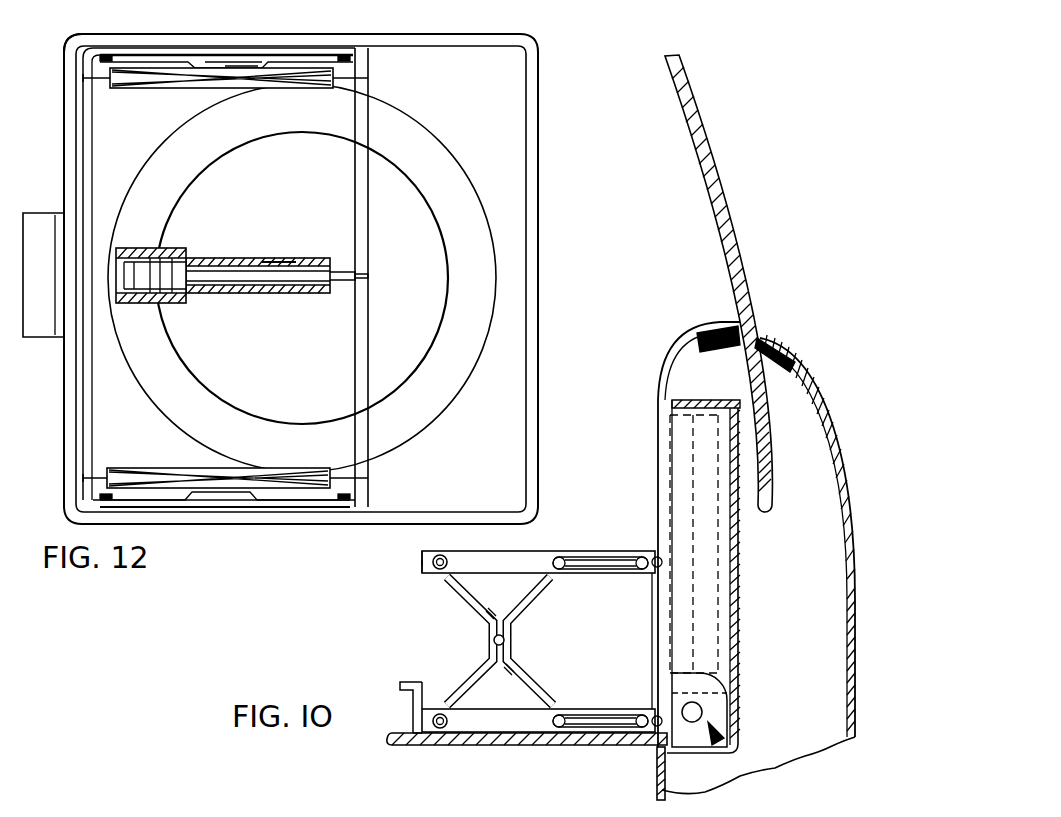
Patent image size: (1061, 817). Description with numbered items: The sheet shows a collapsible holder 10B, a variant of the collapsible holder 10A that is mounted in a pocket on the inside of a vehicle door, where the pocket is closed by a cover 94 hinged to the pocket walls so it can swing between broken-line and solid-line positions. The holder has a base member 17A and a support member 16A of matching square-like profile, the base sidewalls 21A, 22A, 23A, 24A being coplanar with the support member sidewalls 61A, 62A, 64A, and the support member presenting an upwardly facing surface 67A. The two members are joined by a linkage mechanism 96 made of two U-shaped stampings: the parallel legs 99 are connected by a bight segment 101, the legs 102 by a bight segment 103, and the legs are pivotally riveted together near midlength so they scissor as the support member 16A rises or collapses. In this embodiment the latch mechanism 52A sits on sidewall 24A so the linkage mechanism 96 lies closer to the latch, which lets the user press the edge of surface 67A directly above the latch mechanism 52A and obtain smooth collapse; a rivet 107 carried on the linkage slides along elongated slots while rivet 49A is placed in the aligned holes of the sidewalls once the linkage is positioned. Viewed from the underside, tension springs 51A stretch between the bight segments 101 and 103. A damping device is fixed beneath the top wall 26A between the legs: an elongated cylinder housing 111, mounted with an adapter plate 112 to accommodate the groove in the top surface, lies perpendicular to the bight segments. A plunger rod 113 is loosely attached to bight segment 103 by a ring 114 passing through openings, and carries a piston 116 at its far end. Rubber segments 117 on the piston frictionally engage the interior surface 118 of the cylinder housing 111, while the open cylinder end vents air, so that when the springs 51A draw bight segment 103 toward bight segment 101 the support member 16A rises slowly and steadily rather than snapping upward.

In FIG. 10, the collapsible holder 10A is at (688, 418).
In FIG. 12, the collapsible holder 10B is at (542, 38).
In FIG. 10, the collapsible holder 10B is at (415, 595).
In FIG. 10, the support member 16A is at (425, 551).
In FIG. 12, the base member 17A is at (72, 50).
In FIG. 10, the base member 17A is at (430, 712).
In FIG. 12, the sidewall 21A is at (357, 40).
In FIG. 10, the sidewall 21A is at (478, 734).
In FIG. 12, the sidewall 22A is at (530, 285).
In FIG. 10, the sidewall 22A is at (665, 712).
In FIG. 12, the sidewall 23A is at (55, 521).
In FIG. 12, the sidewall 24A is at (70, 112).
In FIG. 10, the sidewall 24A is at (420, 724).
In FIG. 12, the top wall 26A is at (520, 126).
In FIG. 12, the rivet 49A is at (345, 57).
In FIG. 12, the tension spring 51A is at (298, 88).
In FIG. 12, the latch mechanism 52A is at (25, 240).
In FIG. 10, the latch mechanism 52A is at (398, 681).
In FIG. 10, the sidewall 61A is at (502, 568).
In FIG. 10, the sidewall 62A is at (655, 570).
In FIG. 10, the sidewall 64A is at (492, 641).
In FIG. 10, the upwardly facing surface 67A is at (548, 551).
In FIG. 10, the cover 94 is at (665, 488).
In FIG. 12, the linkage mechanism 96 is at (380, 180).
In FIG. 10, the linkage mechanism 96 is at (514, 639).
In FIG. 12, the leg 99 is at (255, 56).
In FIG. 12, the bight segment 101 is at (88, 412).
In FIG. 12, the leg 102 is at (176, 50).
In FIG. 12, the bight segment 103 is at (368, 352).
In FIG. 12, the rivet 107 is at (106, 57).
In FIG. 12, the cylinder housing 111 is at (231, 254).
In FIG. 12, the adapter plate 112 is at (176, 256).
In FIG. 12, the plunger rod 113 is at (243, 282).
In FIG. 12, the ring 114 is at (356, 292).
In FIG. 12, the piston 116 is at (168, 298).
In FIG. 12, the rubber segment 117 is at (145, 303).
In FIG. 12, the interior surface 118 is at (281, 261).